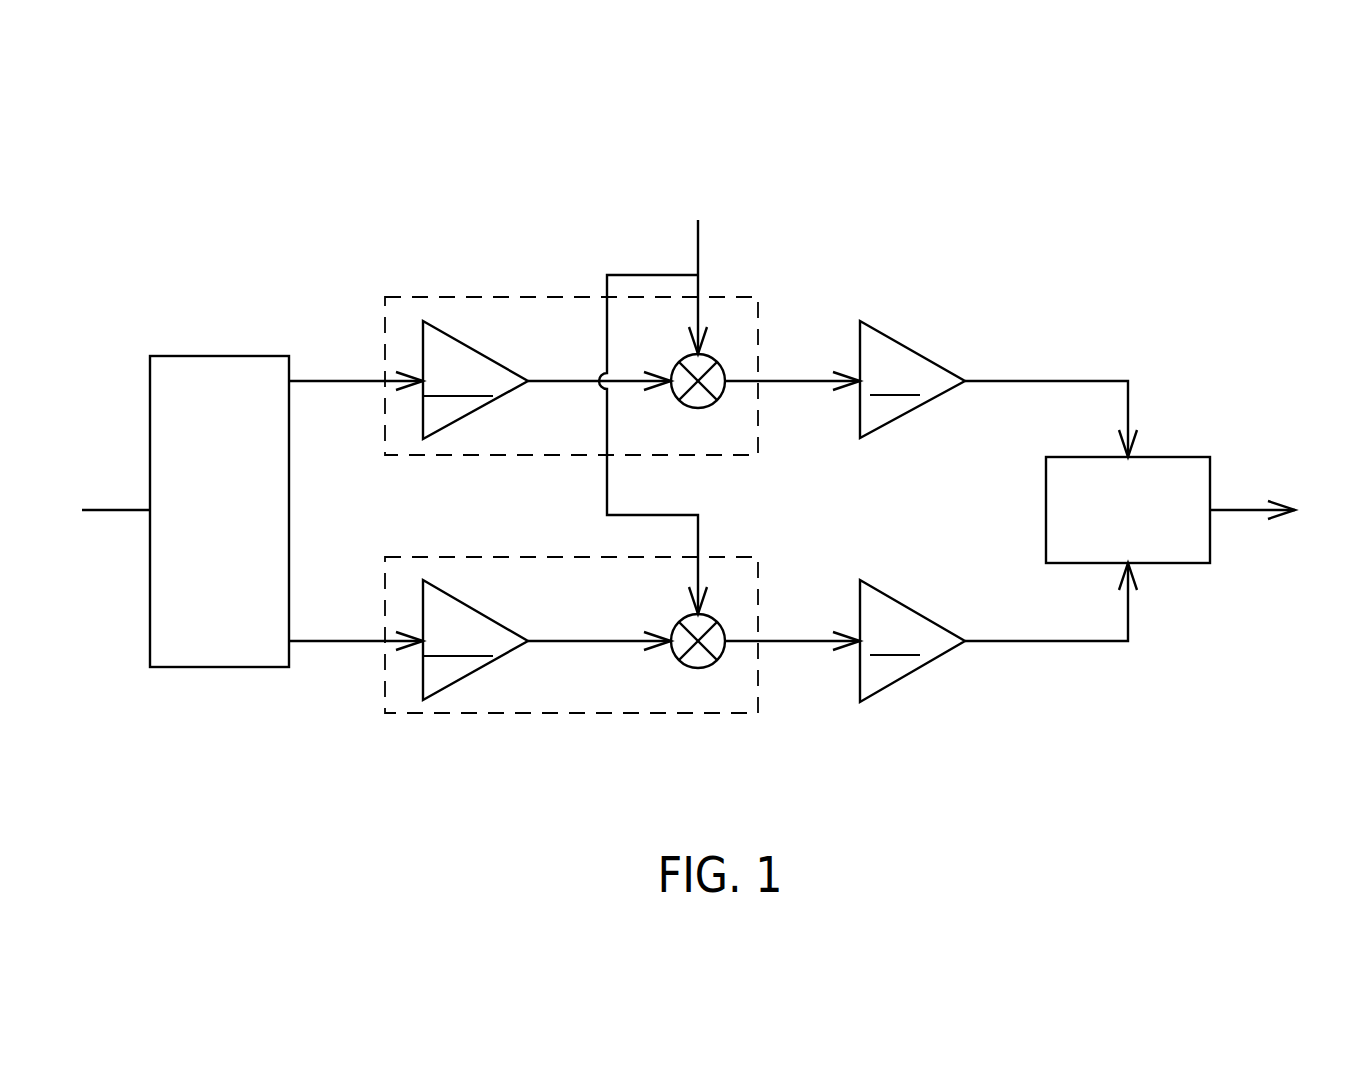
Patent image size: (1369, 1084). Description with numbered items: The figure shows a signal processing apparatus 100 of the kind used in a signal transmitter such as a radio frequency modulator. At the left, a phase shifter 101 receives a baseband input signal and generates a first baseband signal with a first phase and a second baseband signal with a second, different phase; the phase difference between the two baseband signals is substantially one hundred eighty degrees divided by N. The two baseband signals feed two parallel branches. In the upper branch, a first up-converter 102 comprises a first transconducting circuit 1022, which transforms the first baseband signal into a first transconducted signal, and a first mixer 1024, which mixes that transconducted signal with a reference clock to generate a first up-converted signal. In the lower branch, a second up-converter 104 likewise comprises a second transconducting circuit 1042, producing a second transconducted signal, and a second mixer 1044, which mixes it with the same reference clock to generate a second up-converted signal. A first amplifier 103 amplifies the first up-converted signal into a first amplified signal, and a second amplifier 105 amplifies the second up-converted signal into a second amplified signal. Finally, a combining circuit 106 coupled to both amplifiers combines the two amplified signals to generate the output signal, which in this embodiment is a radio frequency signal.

The signal processing apparatus 100 is at (1120, 243).
The phase shifter 101 is at (214, 356).
The first up-converter 102 is at (553, 297).
The first transconducting circuit 1022 is at (475, 380).
The first mixer 1024 is at (698, 409).
The first amplifier 103 is at (912, 379).
The second up-converter 104 is at (553, 557).
The second transconducting circuit 1042 is at (475, 640).
The second mixer 1044 is at (698, 669).
The second amplifier 105 is at (912, 641).
The combining circuit 106 is at (1199, 457).